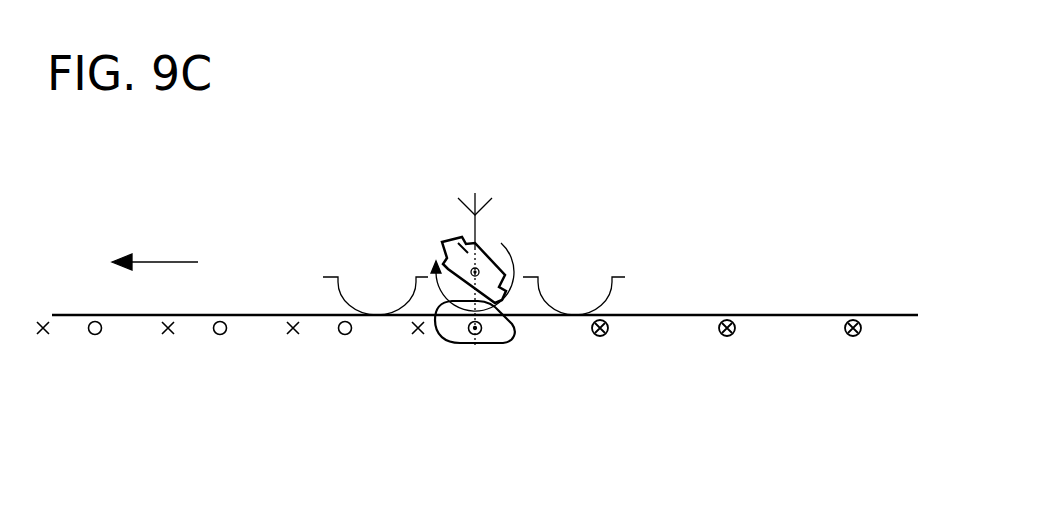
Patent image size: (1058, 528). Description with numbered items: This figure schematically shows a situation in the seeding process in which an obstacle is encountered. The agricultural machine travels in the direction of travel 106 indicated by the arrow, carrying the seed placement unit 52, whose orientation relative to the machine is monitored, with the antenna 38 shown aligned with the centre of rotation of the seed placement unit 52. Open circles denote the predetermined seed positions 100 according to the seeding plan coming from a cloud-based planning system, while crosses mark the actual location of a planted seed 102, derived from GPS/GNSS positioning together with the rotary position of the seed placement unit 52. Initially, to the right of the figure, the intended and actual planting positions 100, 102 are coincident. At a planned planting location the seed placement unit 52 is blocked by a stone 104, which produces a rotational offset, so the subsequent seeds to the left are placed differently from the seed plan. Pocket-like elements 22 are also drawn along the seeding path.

The pockets 22 is at (535, 286).
The antenna 38 is at (472, 228).
The seed placement unit 52 is at (448, 238).
The predetermined seed positions 100 is at (480, 334).
The actual location of a planted seed 102 is at (416, 330).
The stone 104 is at (467, 338).
The direction of travel 106 is at (167, 262).